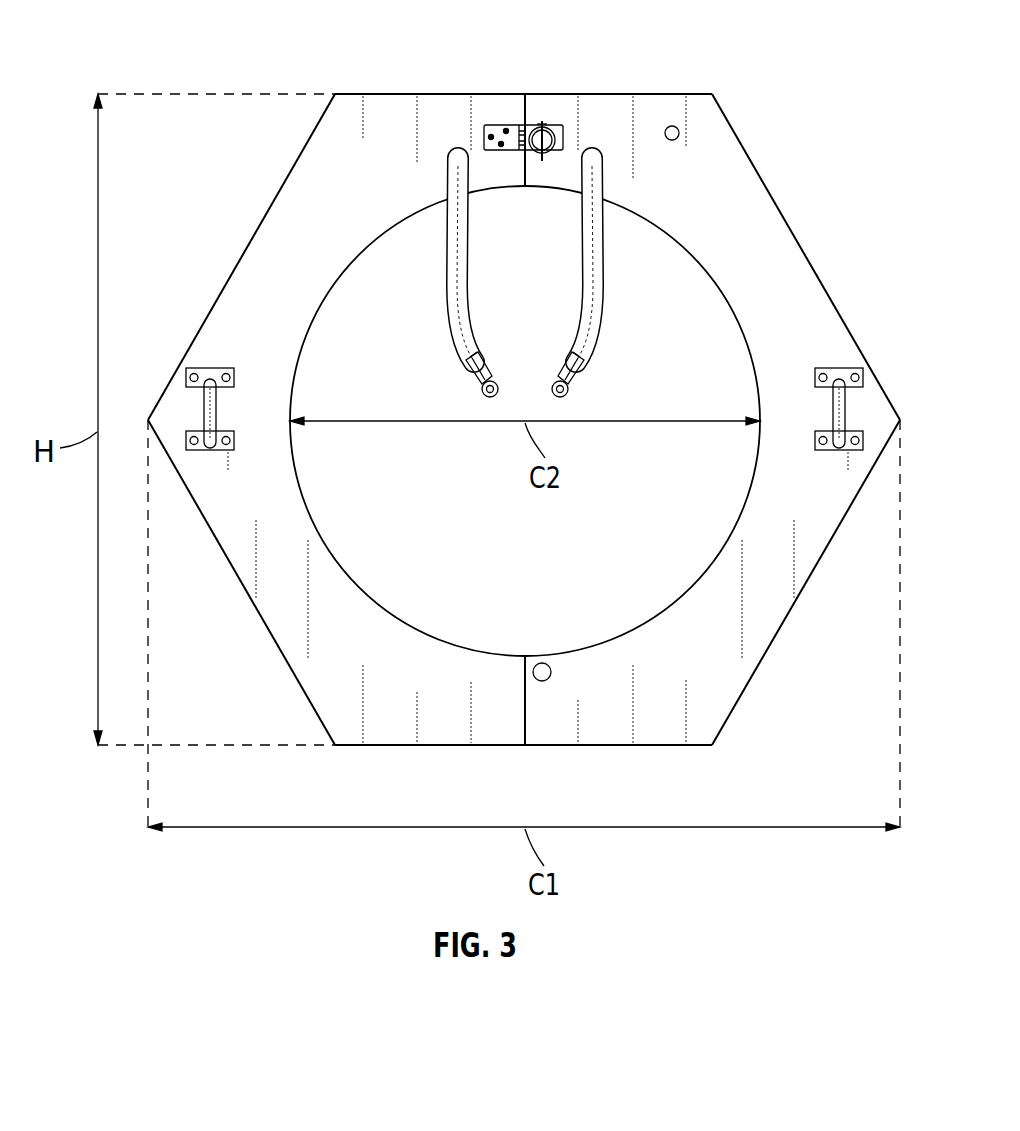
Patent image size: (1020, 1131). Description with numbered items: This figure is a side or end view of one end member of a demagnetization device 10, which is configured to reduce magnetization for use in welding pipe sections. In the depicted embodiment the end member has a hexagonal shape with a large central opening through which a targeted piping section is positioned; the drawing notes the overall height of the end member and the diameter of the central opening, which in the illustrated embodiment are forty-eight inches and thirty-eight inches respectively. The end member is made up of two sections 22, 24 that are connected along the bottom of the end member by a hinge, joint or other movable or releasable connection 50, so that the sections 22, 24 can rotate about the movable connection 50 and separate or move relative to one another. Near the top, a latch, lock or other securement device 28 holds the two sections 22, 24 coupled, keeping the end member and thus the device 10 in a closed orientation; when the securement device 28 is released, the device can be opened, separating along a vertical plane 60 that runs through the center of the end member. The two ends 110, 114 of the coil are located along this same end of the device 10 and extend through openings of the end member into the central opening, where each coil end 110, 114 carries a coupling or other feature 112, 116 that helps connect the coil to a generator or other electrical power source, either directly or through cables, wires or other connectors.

The demagnetization device 10 is at (752, 36).
The section of end member 22 is at (812, 352).
The section of end member 24 is at (228, 326).
The securement device 28 is at (548, 126).
The movable connection 50 is at (541, 662).
The vertical plane 60 is at (525, 98).
The coil end 110 is at (598, 298).
The coupling 112 is at (560, 380).
The coil end 114 is at (452, 268).
The coupling 116 is at (490, 380).